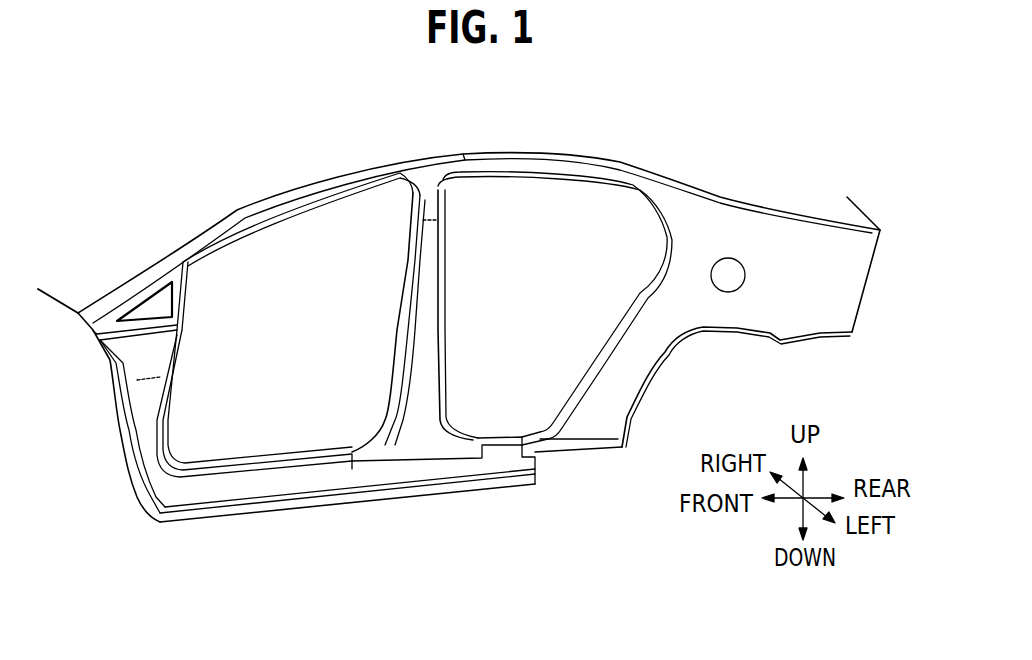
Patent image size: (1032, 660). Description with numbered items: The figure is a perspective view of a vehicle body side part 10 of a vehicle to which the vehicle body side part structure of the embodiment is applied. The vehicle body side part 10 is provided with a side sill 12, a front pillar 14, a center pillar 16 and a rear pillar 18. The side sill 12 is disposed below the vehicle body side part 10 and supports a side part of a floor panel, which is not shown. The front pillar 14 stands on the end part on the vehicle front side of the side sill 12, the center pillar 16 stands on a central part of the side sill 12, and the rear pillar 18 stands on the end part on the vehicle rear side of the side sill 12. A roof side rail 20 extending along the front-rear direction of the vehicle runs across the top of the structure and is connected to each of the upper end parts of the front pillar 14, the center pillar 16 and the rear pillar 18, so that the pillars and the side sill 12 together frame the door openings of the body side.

The vehicle body side part 10 is at (645, 148).
The side sill 12 is at (273, 487).
The front pillar 14 is at (145, 412).
The center pillar 16 is at (427, 303).
The rear pillar 18 is at (647, 355).
The roof side rail 20 is at (498, 163).